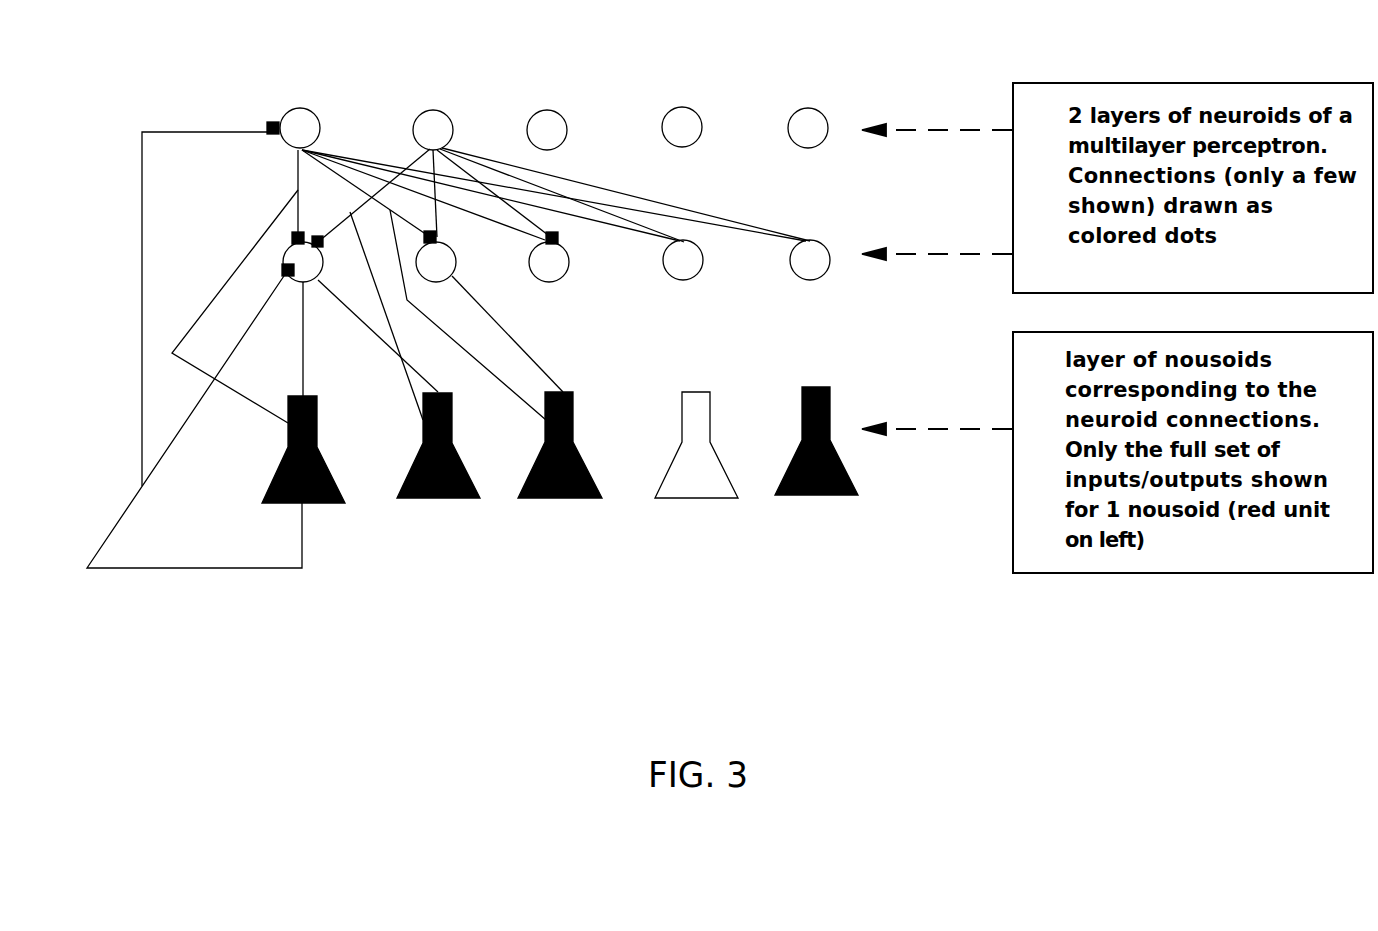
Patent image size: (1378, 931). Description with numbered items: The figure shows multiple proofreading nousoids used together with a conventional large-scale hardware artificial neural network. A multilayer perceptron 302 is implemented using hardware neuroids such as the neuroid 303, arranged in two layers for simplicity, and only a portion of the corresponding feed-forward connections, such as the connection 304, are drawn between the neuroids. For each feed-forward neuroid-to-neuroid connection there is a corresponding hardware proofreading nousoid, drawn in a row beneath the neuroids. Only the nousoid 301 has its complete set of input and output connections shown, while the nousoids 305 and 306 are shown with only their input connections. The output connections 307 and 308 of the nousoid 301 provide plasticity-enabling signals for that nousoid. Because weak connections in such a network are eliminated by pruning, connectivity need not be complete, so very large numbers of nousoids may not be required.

The proofreading nousoid 301 is at (316, 504).
The multilayer perceptron 302 is at (856, 115).
The hardware neuroid 303 is at (447, 116).
The feed-forward connection 304 is at (297, 237).
The nousoid 305 is at (424, 499).
The nousoid 306 is at (551, 498).
The output connection 307 is at (268, 126).
The output connection 308 is at (287, 268).